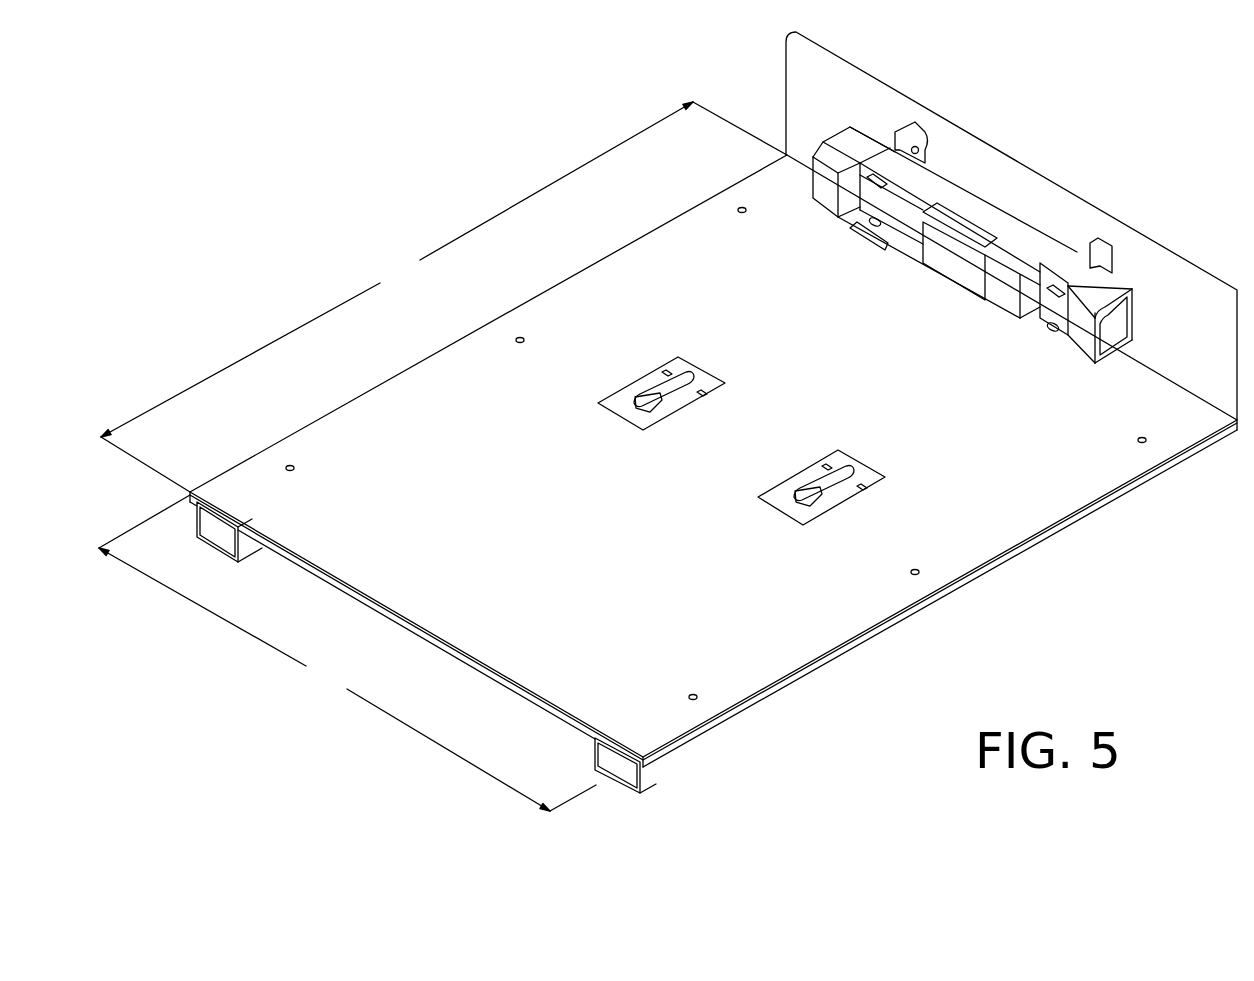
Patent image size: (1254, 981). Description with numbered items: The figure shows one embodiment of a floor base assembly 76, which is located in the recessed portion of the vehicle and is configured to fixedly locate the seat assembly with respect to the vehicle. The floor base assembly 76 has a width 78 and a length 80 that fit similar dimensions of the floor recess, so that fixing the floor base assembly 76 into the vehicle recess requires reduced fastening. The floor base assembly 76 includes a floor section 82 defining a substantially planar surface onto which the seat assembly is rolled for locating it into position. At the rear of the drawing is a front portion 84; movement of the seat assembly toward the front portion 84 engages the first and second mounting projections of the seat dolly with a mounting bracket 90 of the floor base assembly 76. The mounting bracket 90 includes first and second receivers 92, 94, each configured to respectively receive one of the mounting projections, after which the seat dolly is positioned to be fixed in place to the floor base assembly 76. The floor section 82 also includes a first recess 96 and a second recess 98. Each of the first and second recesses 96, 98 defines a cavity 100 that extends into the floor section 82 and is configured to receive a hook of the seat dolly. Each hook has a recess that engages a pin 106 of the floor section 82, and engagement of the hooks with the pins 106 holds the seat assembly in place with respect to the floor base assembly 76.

The floor base assembly 76 is at (225, 675).
The width 78 is at (347, 653).
The length 80 is at (444, 297).
The floor section 82 is at (555, 670).
The front portion 84 is at (800, 75).
The mounting bracket 90 is at (1028, 243).
The first receiver 92 is at (1030, 346).
The second receiver 94 is at (848, 238).
The first recess 96 is at (836, 498).
The second recess 98 is at (677, 408).
The cavity 100 is at (662, 390).
The pin 106 is at (640, 410).